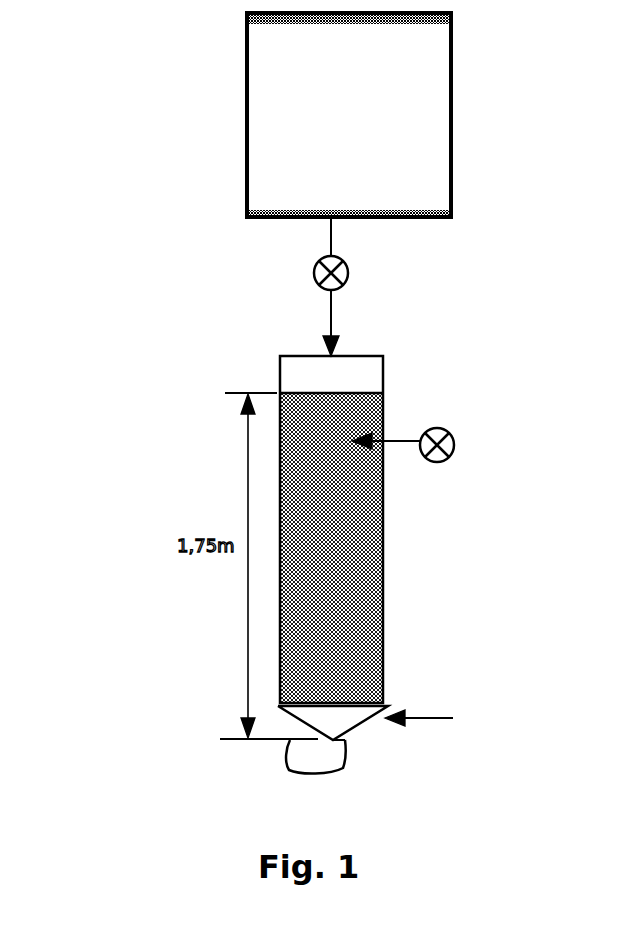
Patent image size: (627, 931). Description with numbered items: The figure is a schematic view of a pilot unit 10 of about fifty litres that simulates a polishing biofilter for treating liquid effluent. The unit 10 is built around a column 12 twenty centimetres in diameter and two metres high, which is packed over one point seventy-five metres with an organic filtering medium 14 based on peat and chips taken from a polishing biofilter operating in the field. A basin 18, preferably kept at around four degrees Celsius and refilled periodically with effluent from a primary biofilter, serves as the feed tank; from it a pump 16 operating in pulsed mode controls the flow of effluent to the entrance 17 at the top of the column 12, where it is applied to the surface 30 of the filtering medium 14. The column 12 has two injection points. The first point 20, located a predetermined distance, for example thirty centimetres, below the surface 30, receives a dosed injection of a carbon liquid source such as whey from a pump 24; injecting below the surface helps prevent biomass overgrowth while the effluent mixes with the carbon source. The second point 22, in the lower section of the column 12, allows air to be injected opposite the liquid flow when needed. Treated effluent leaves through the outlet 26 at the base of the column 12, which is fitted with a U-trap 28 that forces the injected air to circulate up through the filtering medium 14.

The pilot unit 10 is at (183, 435).
The column 12 is at (386, 372).
The organic filtering medium 14 is at (348, 566).
The pump 16 is at (348, 263).
The entrance 17 is at (325, 352).
The basin 18 is at (455, 146).
The first point of injection 20 is at (397, 438).
The second point of injection 22 is at (399, 704).
The pump 24 is at (455, 432).
The outlet 26 is at (352, 742).
The U-trap 28 is at (290, 770).
The surface of the filtering medium 30 is at (322, 392).